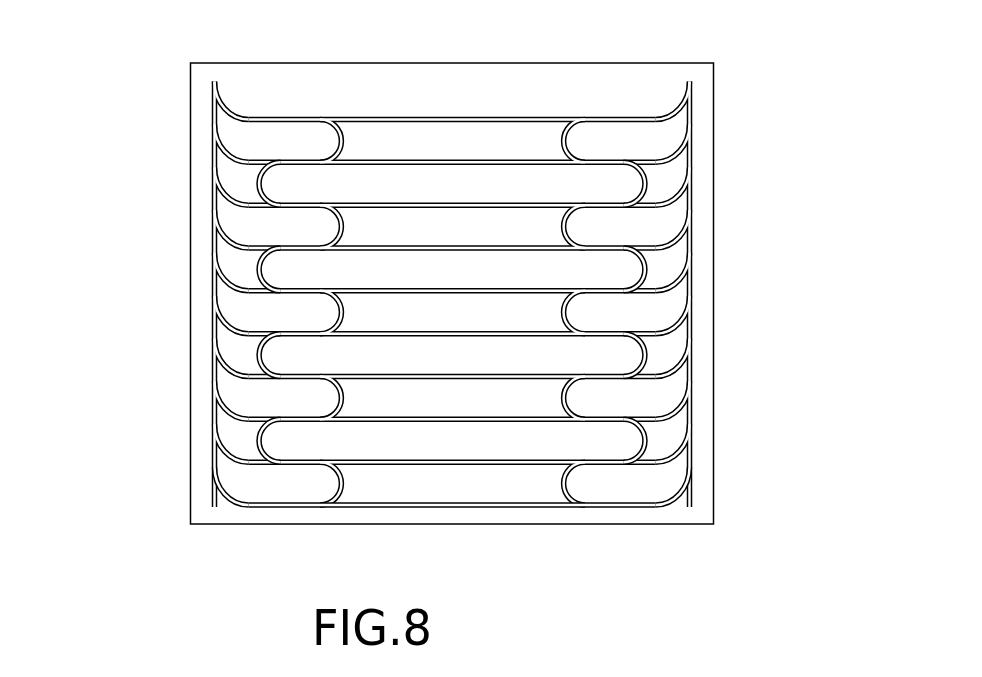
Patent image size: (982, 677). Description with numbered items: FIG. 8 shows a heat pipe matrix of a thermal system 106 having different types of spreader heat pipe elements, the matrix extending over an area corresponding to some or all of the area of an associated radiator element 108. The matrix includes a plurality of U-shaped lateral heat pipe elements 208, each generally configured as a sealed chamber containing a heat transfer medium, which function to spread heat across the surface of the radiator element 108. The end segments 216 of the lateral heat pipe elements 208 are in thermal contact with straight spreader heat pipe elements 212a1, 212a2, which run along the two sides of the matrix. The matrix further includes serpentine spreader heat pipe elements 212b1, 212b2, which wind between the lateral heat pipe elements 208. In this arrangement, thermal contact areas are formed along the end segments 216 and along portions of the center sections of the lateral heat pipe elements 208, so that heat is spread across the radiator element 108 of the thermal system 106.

The thermal system 106 is at (455, 309).
The radiator element 108 is at (713, 245).
The lateral heat pipe element 208 is at (376, 505).
The straight spreader heat pipe element 212a1 is at (212, 113).
The straight spreader heat pipe element 212a2 is at (692, 112).
The serpentine spreader heat pipe element 212b1 is at (259, 184).
The serpentine spreader heat pipe element 212b2 is at (645, 183).
The end segment 216 is at (212, 481).